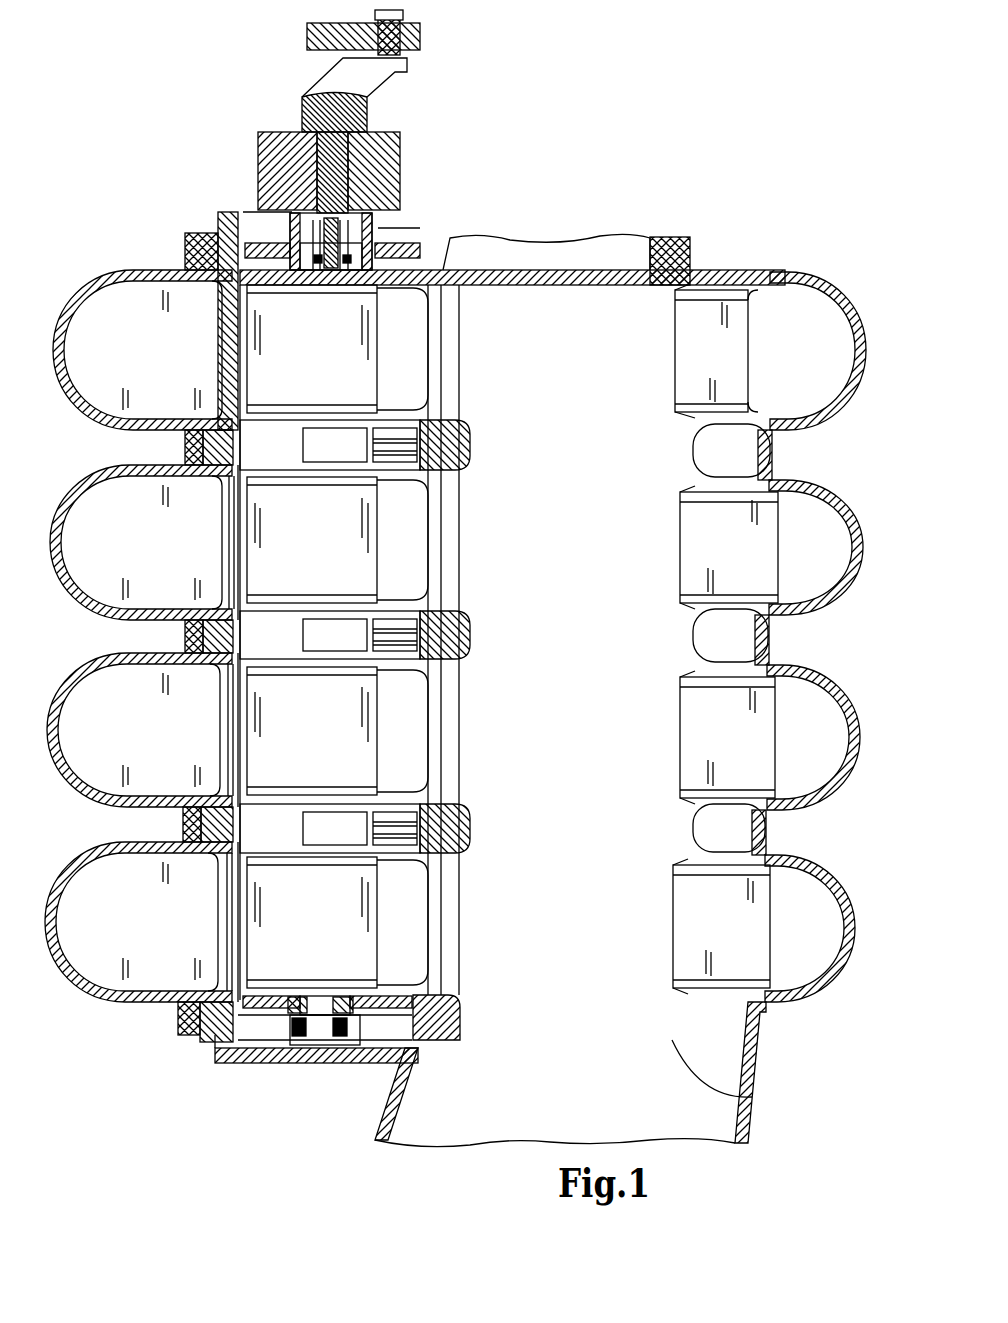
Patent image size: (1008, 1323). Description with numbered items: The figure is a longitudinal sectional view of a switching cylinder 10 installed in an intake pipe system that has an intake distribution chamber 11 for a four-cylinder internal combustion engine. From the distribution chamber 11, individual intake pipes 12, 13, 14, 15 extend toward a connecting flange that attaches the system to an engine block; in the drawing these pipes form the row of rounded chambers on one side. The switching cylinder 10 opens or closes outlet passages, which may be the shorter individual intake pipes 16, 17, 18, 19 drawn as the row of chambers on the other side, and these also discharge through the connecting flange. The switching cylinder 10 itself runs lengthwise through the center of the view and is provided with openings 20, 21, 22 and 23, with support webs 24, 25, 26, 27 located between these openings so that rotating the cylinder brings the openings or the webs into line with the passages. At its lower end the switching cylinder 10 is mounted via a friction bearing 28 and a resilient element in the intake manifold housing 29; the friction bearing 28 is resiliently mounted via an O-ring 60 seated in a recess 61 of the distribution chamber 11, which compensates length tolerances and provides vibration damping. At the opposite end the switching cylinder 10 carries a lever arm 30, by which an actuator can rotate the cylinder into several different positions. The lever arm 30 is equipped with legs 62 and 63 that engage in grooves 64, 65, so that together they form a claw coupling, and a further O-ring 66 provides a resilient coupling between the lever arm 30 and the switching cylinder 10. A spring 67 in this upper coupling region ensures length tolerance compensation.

The switching cylinder 10 is at (415, 600).
The intake distribution chamber 11 is at (742, 1097).
The individual intake pipe 12 is at (815, 318).
The individual intake pipe 13 is at (812, 495).
The individual intake pipe 14 is at (806, 690).
The individual intake pipe 15 is at (806, 878).
The shorter individual intake pipe 16 is at (112, 302).
The shorter individual intake pipe 17 is at (106, 498).
The shorter individual intake pipe 18 is at (104, 688).
The shorter individual intake pipe 19 is at (100, 878).
The opening 20 is at (420, 368).
The opening 21 is at (420, 555).
The opening 22 is at (420, 746).
The opening 23 is at (415, 935).
The support web 24 is at (405, 424).
The support web 25 is at (400, 658).
The support web 26 is at (390, 825).
The support web 27 is at (393, 998).
The friction bearing 28 is at (333, 1060).
The intake manifold housing 29 is at (392, 1102).
The lever arm 30 is at (372, 217).
The O-ring 60 is at (287, 1030).
The recess 61 is at (282, 1030).
The leg 62 is at (378, 250).
The leg 63 is at (250, 243).
The groove 64 is at (272, 285).
The groove 65 is at (398, 285).
The O-ring 66 is at (322, 285).
The spring 67 is at (300, 285).